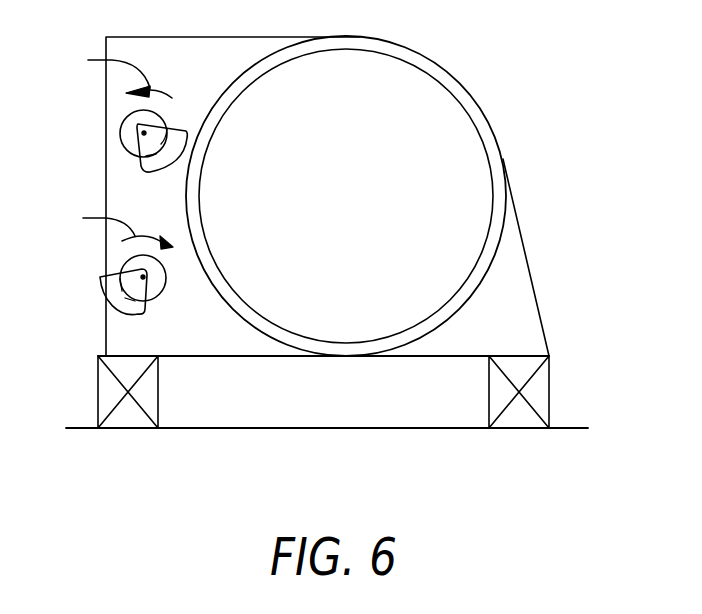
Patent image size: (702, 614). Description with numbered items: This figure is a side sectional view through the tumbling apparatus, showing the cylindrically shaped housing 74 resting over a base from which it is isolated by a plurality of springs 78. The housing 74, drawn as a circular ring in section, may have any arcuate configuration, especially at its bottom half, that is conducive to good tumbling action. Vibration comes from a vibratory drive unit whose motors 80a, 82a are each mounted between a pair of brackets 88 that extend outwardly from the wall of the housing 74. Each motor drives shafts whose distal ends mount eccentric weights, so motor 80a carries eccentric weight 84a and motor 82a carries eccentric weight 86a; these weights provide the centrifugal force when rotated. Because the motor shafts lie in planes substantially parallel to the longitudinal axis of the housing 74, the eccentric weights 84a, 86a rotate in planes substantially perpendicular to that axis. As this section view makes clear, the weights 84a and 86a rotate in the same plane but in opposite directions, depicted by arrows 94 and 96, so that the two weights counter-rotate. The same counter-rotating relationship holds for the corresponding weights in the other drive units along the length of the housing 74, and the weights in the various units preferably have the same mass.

The housing 74 is at (430, 60).
The springs 78 is at (551, 372).
The motor 80a is at (120, 118).
The motor 82a is at (126, 257).
The eccentric weight 84a is at (136, 162).
The eccentric weight 86a is at (110, 295).
The brackets 88 is at (177, 36).
The arrow 94 is at (111, 72).
The arrow 96 is at (104, 228).